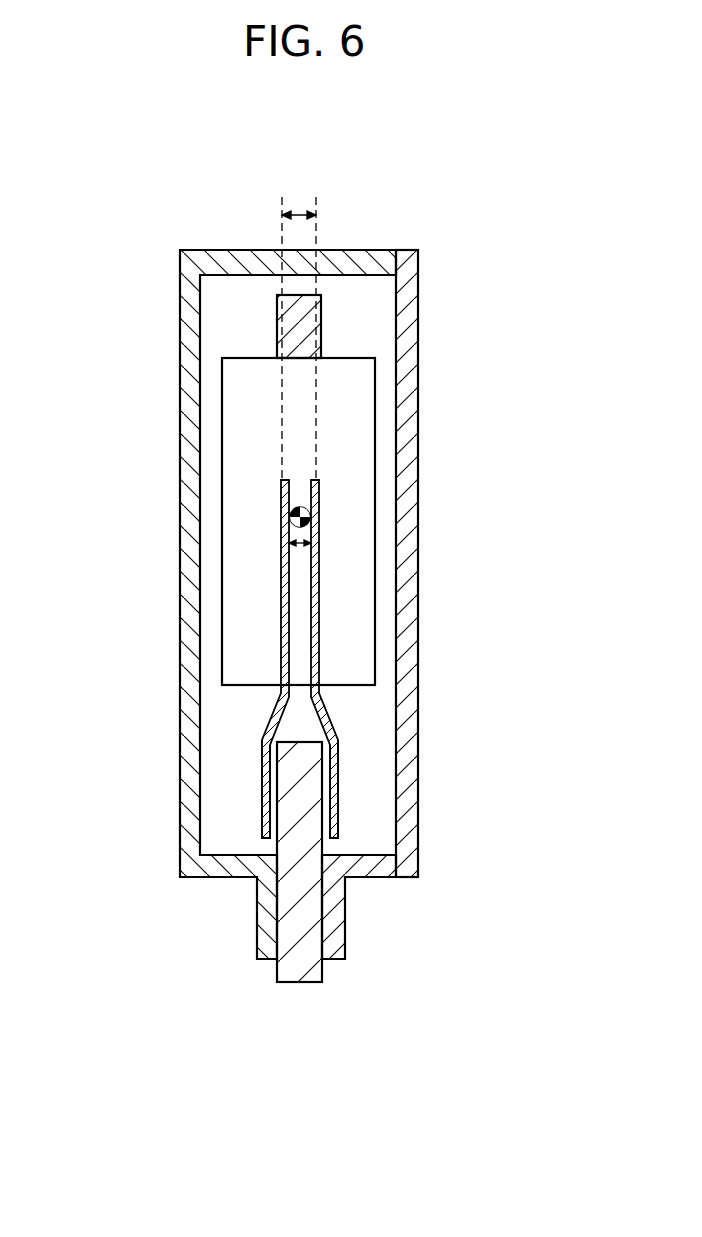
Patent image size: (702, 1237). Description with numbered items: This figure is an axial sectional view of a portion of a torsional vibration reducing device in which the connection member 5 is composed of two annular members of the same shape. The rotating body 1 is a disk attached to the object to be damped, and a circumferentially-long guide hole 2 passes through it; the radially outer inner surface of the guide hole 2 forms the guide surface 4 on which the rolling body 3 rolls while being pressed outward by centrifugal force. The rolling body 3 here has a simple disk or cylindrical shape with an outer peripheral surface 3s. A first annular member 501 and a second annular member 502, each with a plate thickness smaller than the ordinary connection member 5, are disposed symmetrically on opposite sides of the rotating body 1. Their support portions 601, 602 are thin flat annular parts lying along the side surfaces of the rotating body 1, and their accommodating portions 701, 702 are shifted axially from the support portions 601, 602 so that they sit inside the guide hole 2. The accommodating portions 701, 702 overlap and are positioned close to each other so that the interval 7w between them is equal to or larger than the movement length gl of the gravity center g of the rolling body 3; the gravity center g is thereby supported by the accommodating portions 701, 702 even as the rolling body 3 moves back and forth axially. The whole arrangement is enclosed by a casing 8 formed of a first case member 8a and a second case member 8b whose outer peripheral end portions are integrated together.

The rotating body 1 is at (303, 960).
The guide hole 2 is at (303, 730).
The rolling body 3 is at (355, 402).
The outer peripheral surface 3s is at (350, 358).
The guide surface 4 is at (300, 358).
The connection member 5 is at (310, 650).
The interval between accommodating portions 7w is at (302, 208).
The casing 8 is at (306, 557).
The first case member 8a is at (360, 258).
The second case member 8b is at (404, 262).
The gravity center g is at (308, 522).
The movement length gl is at (300, 545).
The first annular member 501 is at (170, 659).
The support portion 601 is at (262, 780).
The accommodating portion 701 is at (281, 617).
The second annular member 502 is at (440, 659).
The support portion 602 is at (336, 722).
The accommodating portion 702 is at (319, 625).